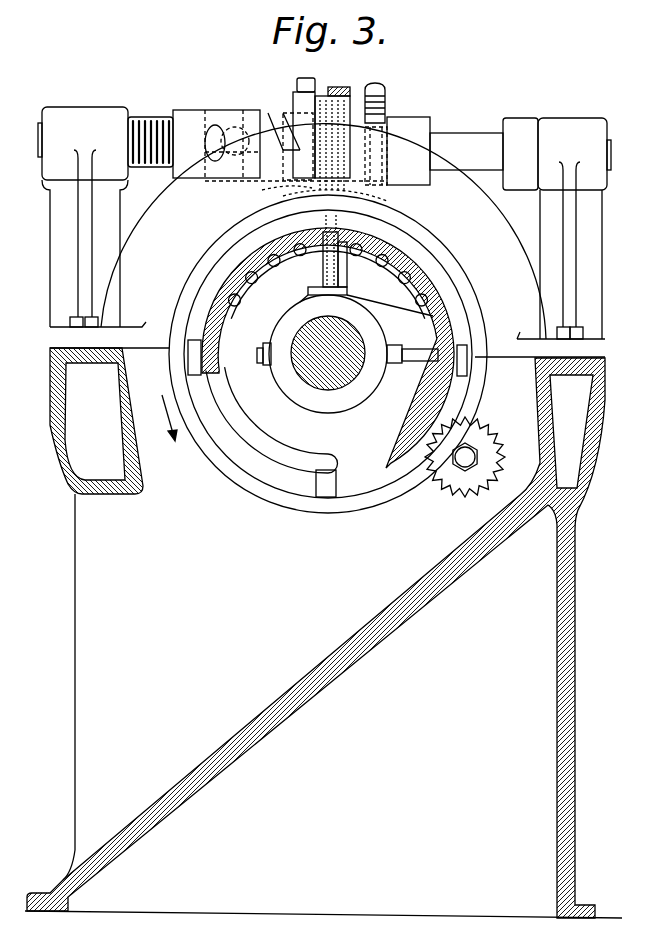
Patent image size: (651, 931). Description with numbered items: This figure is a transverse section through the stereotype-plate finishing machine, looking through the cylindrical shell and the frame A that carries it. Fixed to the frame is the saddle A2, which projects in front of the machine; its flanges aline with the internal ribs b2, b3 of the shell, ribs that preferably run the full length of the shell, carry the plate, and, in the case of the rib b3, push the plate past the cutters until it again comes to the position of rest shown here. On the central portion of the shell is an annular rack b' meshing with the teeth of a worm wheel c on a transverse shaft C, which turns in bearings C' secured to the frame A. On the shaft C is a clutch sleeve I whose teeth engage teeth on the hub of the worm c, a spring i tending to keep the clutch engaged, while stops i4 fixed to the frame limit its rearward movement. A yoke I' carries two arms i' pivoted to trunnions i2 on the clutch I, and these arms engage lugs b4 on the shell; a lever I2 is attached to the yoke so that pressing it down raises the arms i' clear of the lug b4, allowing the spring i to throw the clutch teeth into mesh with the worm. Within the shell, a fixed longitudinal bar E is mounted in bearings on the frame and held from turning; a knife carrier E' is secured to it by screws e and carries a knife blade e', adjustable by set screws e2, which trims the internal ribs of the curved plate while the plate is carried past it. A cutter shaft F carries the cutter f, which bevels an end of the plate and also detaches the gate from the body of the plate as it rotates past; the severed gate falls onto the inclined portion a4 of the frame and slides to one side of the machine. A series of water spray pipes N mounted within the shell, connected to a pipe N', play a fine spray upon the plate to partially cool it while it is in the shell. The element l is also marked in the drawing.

The frame A is at (323, 521).
The inclined portion of the frame a4 is at (316, 638).
The fixed saddle A2 is at (343, 354).
The transverse shaft C is at (434, 151).
The bearings C' is at (324, 223).
The spring i is at (150, 132).
The clutch sleeve I is at (280, 132).
The trunnions i2 is at (241, 119).
The stops i4 is at (204, 143).
The yoke I' is at (291, 121).
The lever I2 is at (332, 125).
The worm wheel c is at (355, 100).
The lugs b4 is at (335, 205).
The annular rack b' is at (409, 204).
The arms i' is at (271, 198).
The internal rib b2 is at (311, 348).
The internal rib b3 is at (472, 360).
The water spray pipes N is at (328, 281).
The clamp bolt l is at (323, 279).
The fixed longitudinal bar E is at (328, 343).
The knife carrier E' is at (351, 356).
The screws e is at (257, 345).
The set screws e2 is at (400, 344).
The knife blade e' is at (420, 369).
The pipe N' is at (284, 432).
The cutter shaft F is at (472, 450).
The cutter f is at (477, 426).